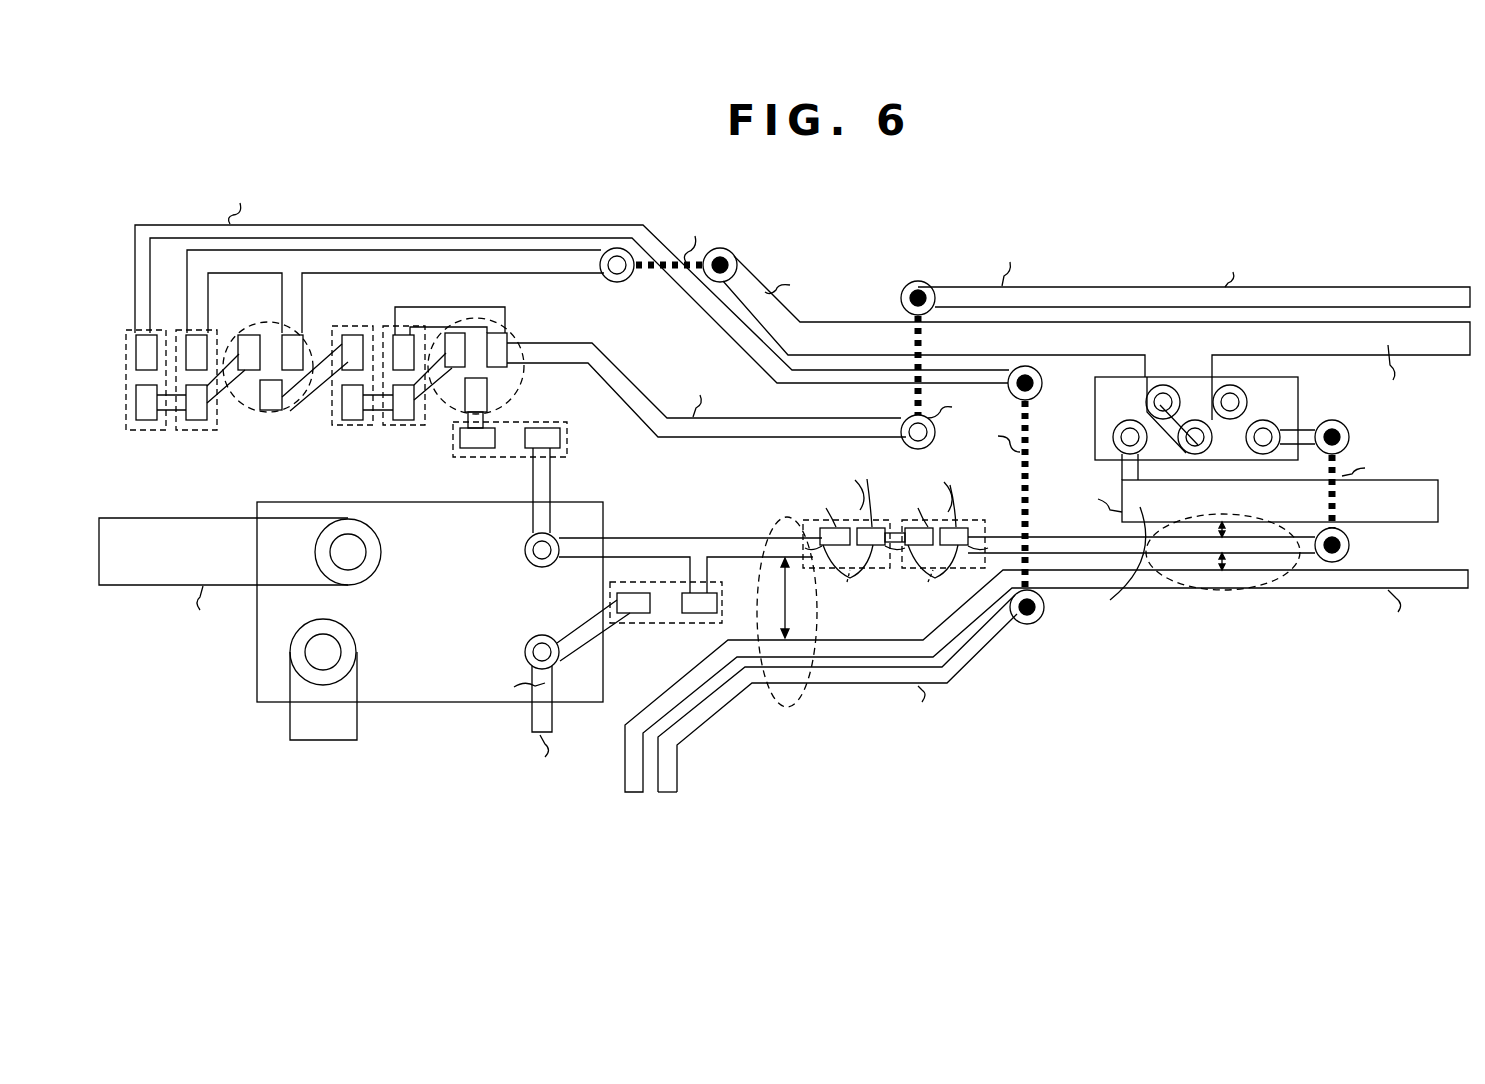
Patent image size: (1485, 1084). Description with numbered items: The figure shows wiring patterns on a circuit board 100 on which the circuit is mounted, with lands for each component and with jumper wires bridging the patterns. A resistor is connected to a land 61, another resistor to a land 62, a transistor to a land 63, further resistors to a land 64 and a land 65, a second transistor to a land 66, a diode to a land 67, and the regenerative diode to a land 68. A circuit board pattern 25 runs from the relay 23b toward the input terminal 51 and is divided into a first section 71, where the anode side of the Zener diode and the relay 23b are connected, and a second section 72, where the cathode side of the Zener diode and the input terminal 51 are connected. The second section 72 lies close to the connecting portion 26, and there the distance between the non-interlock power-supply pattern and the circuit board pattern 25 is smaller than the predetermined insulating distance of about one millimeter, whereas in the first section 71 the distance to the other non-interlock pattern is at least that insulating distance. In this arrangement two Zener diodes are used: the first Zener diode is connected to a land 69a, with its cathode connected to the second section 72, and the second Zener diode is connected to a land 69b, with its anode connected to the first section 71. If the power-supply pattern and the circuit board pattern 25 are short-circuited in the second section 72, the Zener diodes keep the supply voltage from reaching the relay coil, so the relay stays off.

The circuit board 100 is at (385, 140).
The land 61 is at (138, 438).
The land 62 is at (193, 438).
The land 63 is at (270, 425).
The land 64 is at (350, 428).
The land 65 is at (398, 428).
The land 66 is at (520, 380).
The land 67 is at (567, 440).
The land 68 is at (653, 626).
The land 69a is at (906, 570).
The land 69b is at (818, 585).
The first section 71 is at (787, 708).
The second section 72 is at (1268, 582).
The relay 23b is at (270, 704).
The circuit board pattern 25 is at (640, 537).
The connecting portion 26 is at (1172, 418).
The input terminal 51 is at (1272, 424).